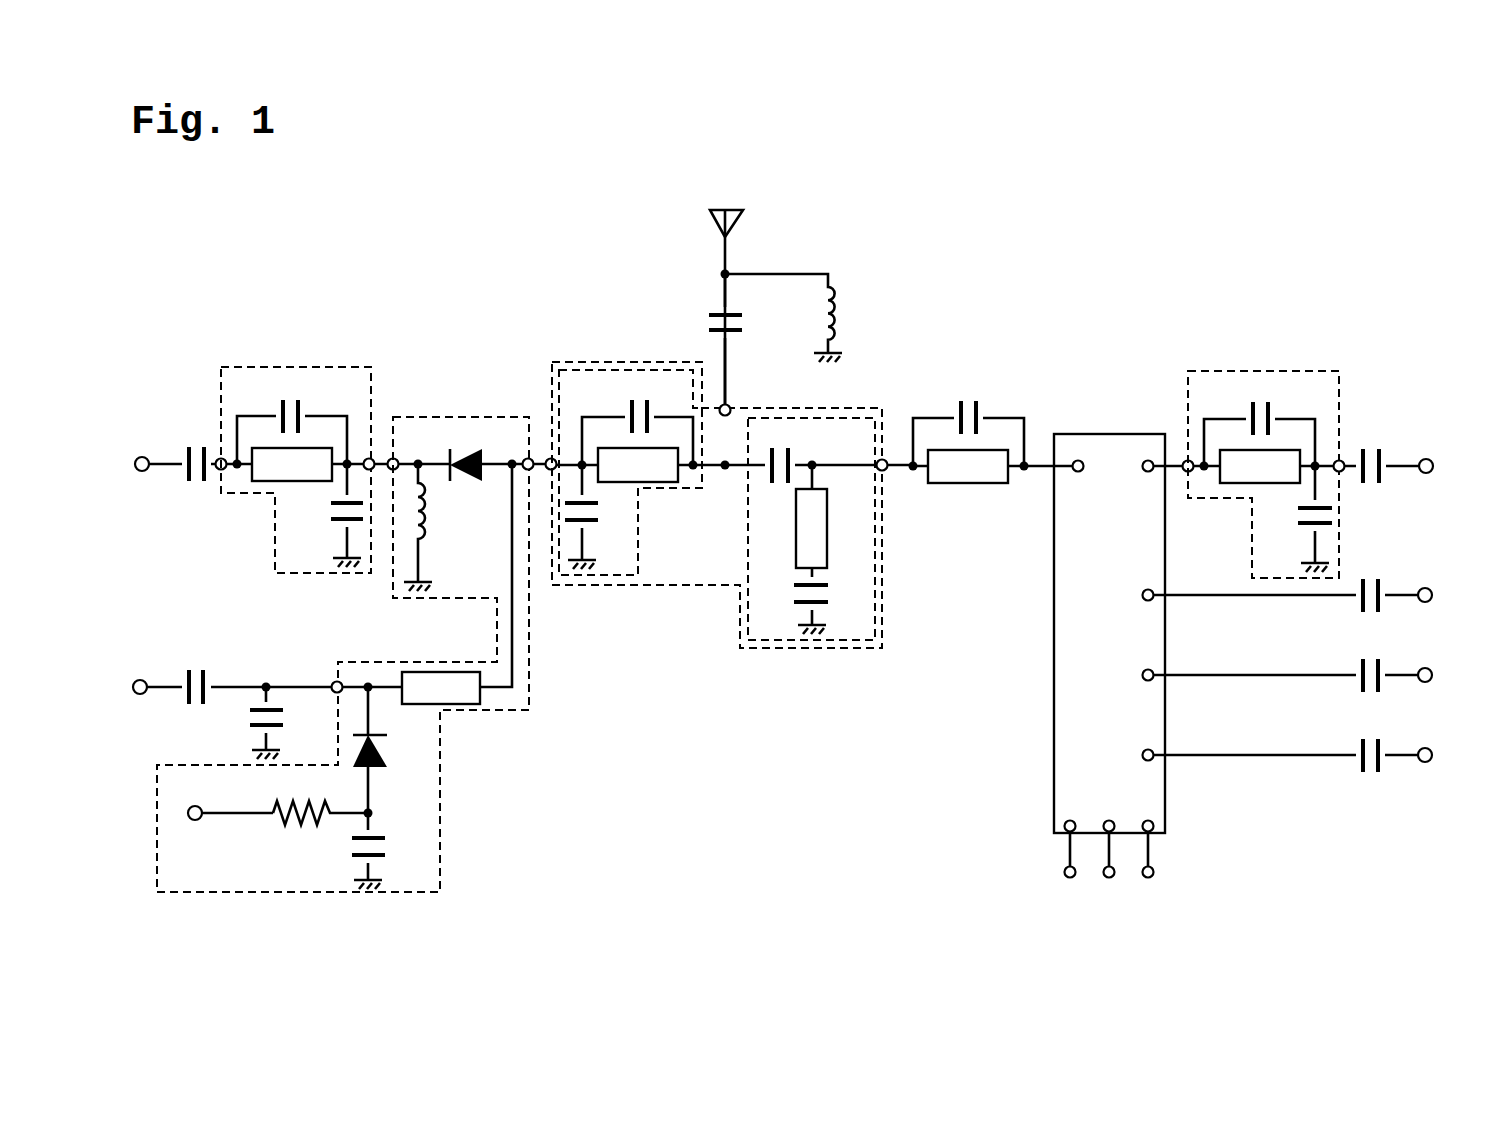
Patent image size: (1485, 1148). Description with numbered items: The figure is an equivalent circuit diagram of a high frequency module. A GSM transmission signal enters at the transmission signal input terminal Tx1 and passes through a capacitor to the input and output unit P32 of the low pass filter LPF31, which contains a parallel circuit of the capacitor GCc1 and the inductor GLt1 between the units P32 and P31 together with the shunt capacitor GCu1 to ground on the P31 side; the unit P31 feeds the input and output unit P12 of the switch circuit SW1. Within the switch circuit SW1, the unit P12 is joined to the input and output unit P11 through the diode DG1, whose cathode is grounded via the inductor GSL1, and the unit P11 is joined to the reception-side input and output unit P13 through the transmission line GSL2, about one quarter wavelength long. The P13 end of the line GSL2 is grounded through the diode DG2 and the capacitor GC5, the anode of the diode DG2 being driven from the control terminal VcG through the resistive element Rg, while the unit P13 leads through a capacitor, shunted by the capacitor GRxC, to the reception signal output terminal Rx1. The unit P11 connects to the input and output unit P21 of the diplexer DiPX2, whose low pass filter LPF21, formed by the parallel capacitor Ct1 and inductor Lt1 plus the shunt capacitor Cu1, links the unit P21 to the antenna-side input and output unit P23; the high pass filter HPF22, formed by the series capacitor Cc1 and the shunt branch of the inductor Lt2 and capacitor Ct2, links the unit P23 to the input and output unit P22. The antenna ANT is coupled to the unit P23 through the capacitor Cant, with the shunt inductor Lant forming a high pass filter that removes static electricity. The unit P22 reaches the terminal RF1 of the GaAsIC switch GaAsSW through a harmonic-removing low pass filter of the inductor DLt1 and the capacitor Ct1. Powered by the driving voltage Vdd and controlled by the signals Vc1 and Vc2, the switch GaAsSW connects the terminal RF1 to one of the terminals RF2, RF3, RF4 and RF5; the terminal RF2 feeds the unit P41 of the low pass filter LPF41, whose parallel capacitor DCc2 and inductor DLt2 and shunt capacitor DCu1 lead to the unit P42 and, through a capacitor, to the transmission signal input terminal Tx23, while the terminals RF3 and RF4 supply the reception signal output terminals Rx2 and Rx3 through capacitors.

The transmission signal input terminal Tx1 is at (134, 449).
The input and output unit P32 is at (216, 457).
The low pass filter LPF31 is at (287, 357).
The capacitor GCc1 is at (292, 418).
The inductor GLt1 is at (292, 464).
The capacitor GCu1 is at (326, 515).
The input and output unit P31 is at (366, 456).
The input and output unit P12 is at (392, 456).
The switch circuit SW1 is at (497, 417).
The diode DG1 is at (468, 450).
The inductor GSL1 is at (444, 527).
The input and output unit P11 is at (527, 456).
The input and output unit P21 is at (549, 474).
The diplexer DiPX2 is at (678, 585).
The low pass filter LPF21 is at (632, 369).
The capacitor Ct1 is at (803, 419).
The inductor Lt1 is at (638, 465).
The capacitor Cu1 is at (600, 517).
The antenna ANT is at (748, 307).
The input and output unit P23 is at (733, 408).
The capacitor Cant is at (752, 339).
The inductor Lant is at (807, 318).
The high pass filter HPF22 is at (815, 418).
The capacitor Cc1 is at (780, 452).
The inductor Lt2 is at (817, 521).
The capacitor Ct2 is at (830, 609).
The input and output unit P22 is at (883, 456).
The inductor DLt1 is at (968, 466).
The GaAsIC switch GaAsSW is at (1109, 620).
The input and output terminal RF1 is at (1080, 456).
The input and output terminal RF2 is at (1143, 456).
The input and output terminal RF3 is at (1270, 589).
The input and output terminal RF4 is at (1270, 669).
The input and output terminal RF5 is at (1270, 749).
The reception signal output terminal Rx2 is at (1434, 585).
The reception signal output terminal Rx3 is at (1434, 665).
The driving voltage signal input terminal Vdd is at (1056, 866).
The control signal input terminal Vc1 is at (1109, 866).
The control signal input terminal Vc2 is at (1157, 866).
The input and output unit P41 is at (1185, 457).
The low pass filter LPF41 is at (1290, 355).
The capacitor DCc2 is at (1259, 422).
The inductor DLt2 is at (1260, 466).
The capacitor DCu1 is at (1294, 519).
The input and output unit P42 is at (1341, 457).
The transmission signal input terminal Tx23 is at (1435, 456).
The reception signal output terminal Rx1 is at (123, 669).
The capacitor GRxC is at (242, 723).
The input and output unit P13 is at (329, 685).
The transmission line GSL2 is at (441, 688).
The diode DG2 is at (392, 750).
The GSM transmission and reception switching control signal input terminal VcG is at (224, 798).
The resistive element Rg is at (320, 829).
The capacitor GC5 is at (391, 851).